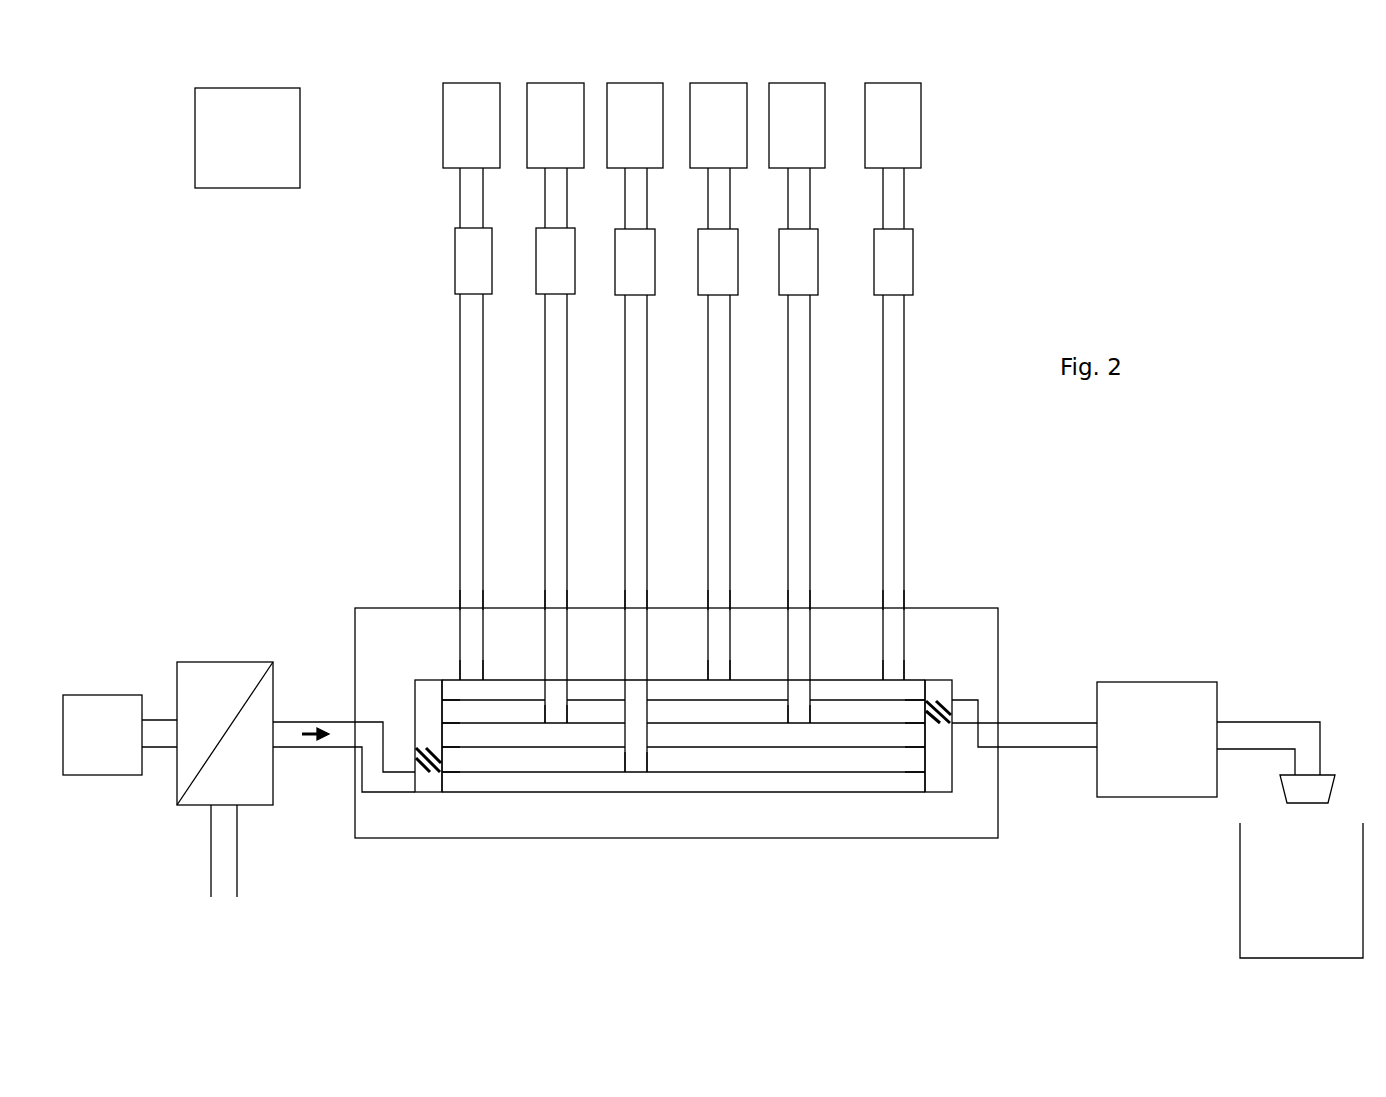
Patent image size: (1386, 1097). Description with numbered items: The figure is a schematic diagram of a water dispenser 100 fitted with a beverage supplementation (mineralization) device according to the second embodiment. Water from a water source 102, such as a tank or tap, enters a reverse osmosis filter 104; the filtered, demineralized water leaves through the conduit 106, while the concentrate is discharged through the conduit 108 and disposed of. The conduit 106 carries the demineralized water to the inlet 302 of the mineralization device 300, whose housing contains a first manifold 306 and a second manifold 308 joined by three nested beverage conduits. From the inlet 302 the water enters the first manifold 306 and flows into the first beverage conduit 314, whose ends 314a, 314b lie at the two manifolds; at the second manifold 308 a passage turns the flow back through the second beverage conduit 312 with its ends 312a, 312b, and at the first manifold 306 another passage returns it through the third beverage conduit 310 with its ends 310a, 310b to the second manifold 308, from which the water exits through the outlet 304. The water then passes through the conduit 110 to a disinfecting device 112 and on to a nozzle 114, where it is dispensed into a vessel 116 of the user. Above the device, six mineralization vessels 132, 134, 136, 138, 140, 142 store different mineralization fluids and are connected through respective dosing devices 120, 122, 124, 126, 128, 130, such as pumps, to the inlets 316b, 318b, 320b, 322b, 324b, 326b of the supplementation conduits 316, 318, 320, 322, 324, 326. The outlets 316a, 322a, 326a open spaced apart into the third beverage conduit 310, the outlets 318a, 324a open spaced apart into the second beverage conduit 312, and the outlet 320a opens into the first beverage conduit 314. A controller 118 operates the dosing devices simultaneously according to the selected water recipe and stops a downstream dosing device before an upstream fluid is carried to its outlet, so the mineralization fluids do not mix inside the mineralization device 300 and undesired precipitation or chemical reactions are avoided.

The water dispenser 100 is at (968, 216).
The water source 102 is at (103, 694).
The reverse osmosis filter 104 is at (228, 661).
The conduit 106 is at (303, 718).
The conduit 108 is at (220, 848).
The conduit 110 is at (1000, 752).
The disinfecting device 112 is at (1158, 798).
The nozzle 114 is at (1318, 790).
The vessel 116 is at (1253, 903).
The controller 118 is at (246, 190).
The first dosing device 120 is at (462, 280).
The second dosing device 122 is at (546, 283).
The third dosing device 124 is at (628, 285).
The fourth dosing device 126 is at (705, 282).
The fifth dosing device 128 is at (786, 283).
The sixth dosing device 130 is at (882, 283).
The first mineralization vessel 132 is at (472, 82).
The second mineralization vessel 134 is at (558, 82).
The third mineralization vessel 136 is at (638, 82).
The fourth mineralization vessel 138 is at (720, 82).
The fifth mineralization vessel 140 is at (798, 82).
The sixth mineralization vessel 142 is at (890, 82).
The mineralization device 300 is at (1018, 582).
The inlet 302 is at (348, 736).
The outlet 304 is at (1040, 720).
The first manifold 306 is at (437, 794).
The second manifold 308 is at (928, 794).
The third beverage conduit 310 is at (512, 690).
The first end of third beverage conduit 310a is at (438, 690).
The second end of third beverage conduit 310b is at (932, 690).
The second beverage conduit 312 is at (472, 748).
The first end of second beverage conduit 312a is at (414, 743).
The second end of second beverage conduit 312b is at (932, 738).
The first beverage conduit 314 is at (688, 782).
The first end of first beverage conduit 314a is at (362, 822).
The second end of first beverage conduit 314b is at (932, 783).
The first supplementation conduit 316 is at (460, 607).
The outlet of first supplementation conduit 316a is at (471, 673).
The inlet of first supplementation conduit 316b is at (469, 603).
The second supplementation conduit 318 is at (556, 636).
The outlet of second supplementation conduit 318a is at (556, 730).
The inlet of second supplementation conduit 318b is at (554, 603).
The third supplementation conduit 320 is at (648, 640).
The outlet of third supplementation conduit 320a is at (636, 779).
The inlet of third supplementation conduit 320b is at (634, 603).
The fourth supplementation conduit 322 is at (722, 667).
The outlet of fourth supplementation conduit 322a is at (719, 686).
The inlet of fourth supplementation conduit 322b is at (718, 603).
The fifth supplementation conduit 324 is at (800, 650).
The outlet of fifth supplementation conduit 324a is at (799, 731).
The inlet of fifth supplementation conduit 324b is at (798, 603).
The sixth supplementation conduit 326 is at (890, 640).
The outlet of sixth supplementation conduit 326a is at (894, 674).
The inlet of sixth supplementation conduit 326b is at (894, 600).